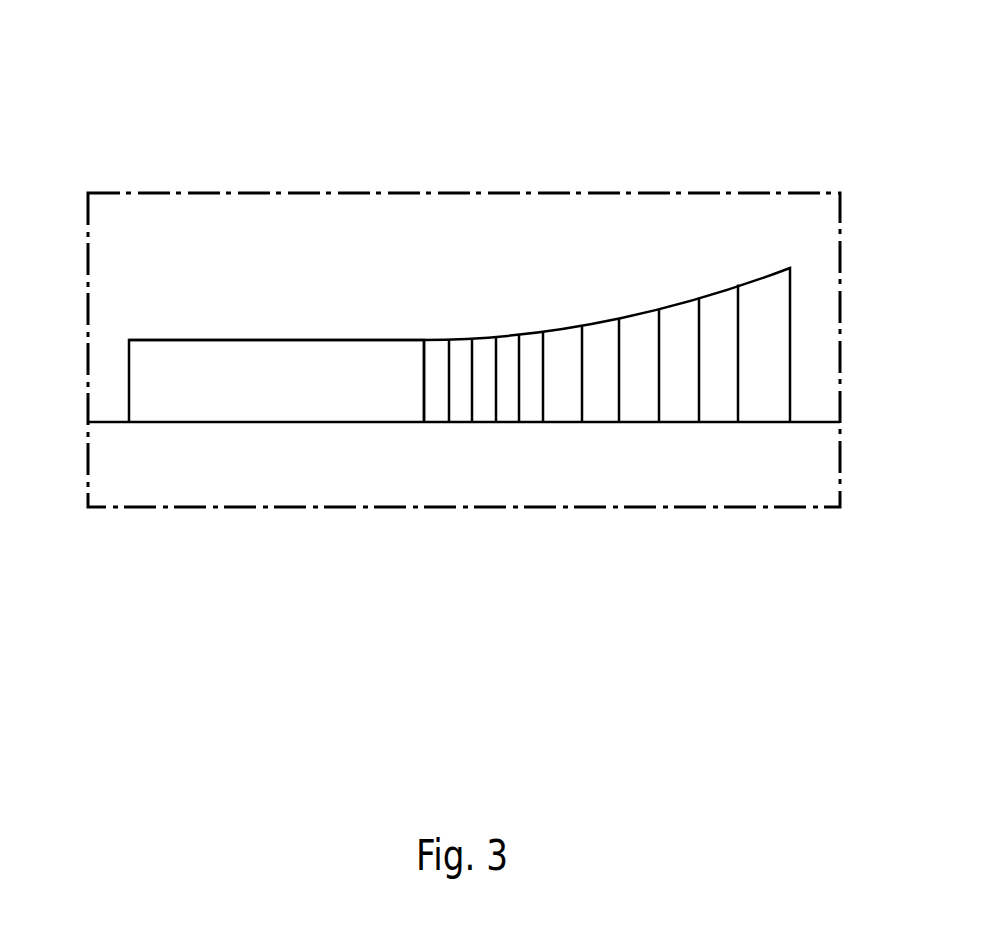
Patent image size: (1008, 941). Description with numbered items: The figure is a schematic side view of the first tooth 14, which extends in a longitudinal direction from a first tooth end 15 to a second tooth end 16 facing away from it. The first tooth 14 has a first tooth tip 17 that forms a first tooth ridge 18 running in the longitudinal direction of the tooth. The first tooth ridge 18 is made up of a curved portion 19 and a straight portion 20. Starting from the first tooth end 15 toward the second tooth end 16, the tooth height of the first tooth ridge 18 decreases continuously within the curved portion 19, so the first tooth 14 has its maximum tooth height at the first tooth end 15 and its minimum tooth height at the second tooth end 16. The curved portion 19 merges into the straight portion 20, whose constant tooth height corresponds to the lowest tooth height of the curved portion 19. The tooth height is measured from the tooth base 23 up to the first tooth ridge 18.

The first tooth 14 is at (368, 118).
The first tooth end 15 is at (850, 304).
The second tooth end 16 is at (76, 392).
The first tooth tip 17 is at (200, 323).
The first tooth ridge 18 is at (439, 338).
The curved portion 19 is at (622, 280).
The straight portion 20 is at (297, 298).
The tooth base 23 is at (715, 440).